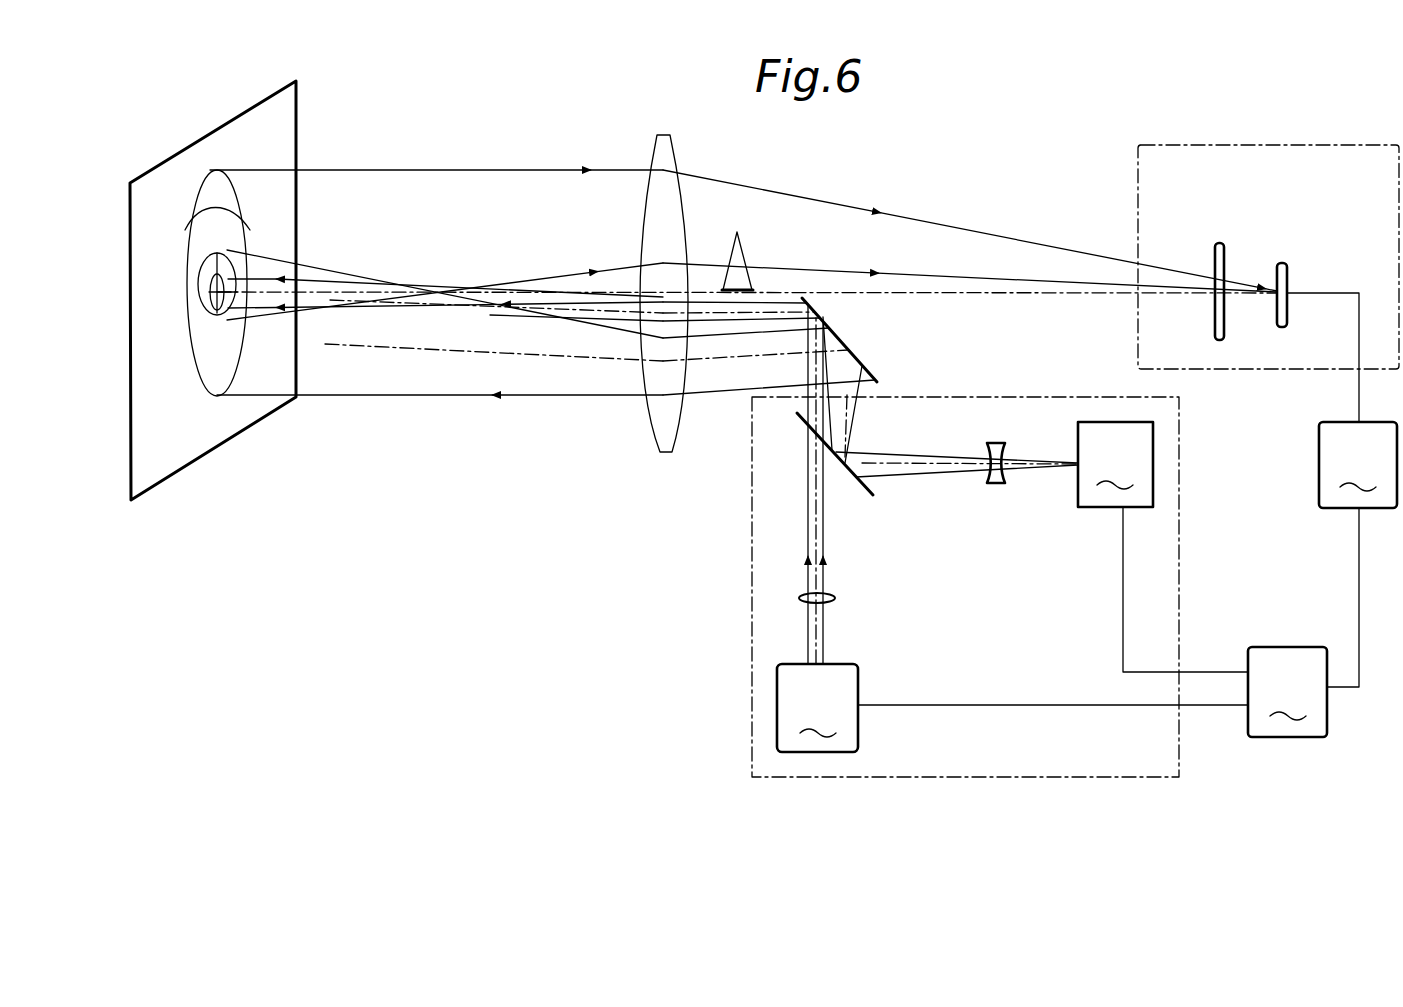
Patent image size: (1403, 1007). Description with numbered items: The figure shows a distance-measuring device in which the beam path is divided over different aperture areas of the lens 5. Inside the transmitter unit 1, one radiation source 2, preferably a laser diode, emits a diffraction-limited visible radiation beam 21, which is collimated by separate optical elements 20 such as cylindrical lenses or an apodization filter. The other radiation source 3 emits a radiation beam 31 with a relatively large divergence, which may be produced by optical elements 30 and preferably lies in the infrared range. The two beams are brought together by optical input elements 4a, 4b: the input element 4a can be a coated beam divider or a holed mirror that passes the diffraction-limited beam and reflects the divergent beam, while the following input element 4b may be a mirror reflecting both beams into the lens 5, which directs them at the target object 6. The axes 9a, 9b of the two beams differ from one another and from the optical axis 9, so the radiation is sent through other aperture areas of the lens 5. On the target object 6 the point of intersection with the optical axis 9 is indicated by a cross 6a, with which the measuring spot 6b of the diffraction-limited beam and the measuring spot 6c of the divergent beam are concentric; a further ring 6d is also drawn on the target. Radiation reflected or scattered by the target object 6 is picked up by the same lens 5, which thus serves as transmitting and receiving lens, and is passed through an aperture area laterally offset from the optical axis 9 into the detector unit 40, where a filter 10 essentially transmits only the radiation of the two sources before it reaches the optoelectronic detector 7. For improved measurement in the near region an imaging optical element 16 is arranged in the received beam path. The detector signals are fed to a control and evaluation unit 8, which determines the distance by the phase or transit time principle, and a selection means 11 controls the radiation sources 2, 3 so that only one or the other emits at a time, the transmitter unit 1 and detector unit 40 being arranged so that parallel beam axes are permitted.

The transmitter unit 1 is at (975, 778).
The radiation source 2 is at (817, 708).
The radiation source 3 is at (1115, 464).
The optical input element 4a is at (862, 493).
The optical input element 4b is at (845, 333).
The lens 5 is at (655, 150).
The target object 6 is at (222, 437).
The cross 6a is at (205, 280).
The measuring spot 6b is at (205, 302).
The measuring spot 6c is at (235, 377).
The outer target ring 6d is at (205, 170).
The optoelectronic detector 7 is at (1283, 263).
The control and evaluation unit 8 is at (1358, 465).
The optical axis 9 is at (1087, 296).
The axis 9a is at (553, 305).
The axis 9b is at (542, 357).
The filter 10 is at (1213, 263).
The selection means 11 is at (1287, 692).
The imaging optical element 16 is at (740, 258).
The optical elements 20 is at (833, 600).
The radiation beam 21 is at (810, 528).
The optical elements 30 is at (992, 484).
The radiation beam 31 is at (915, 457).
The detector unit 40 is at (1291, 145).